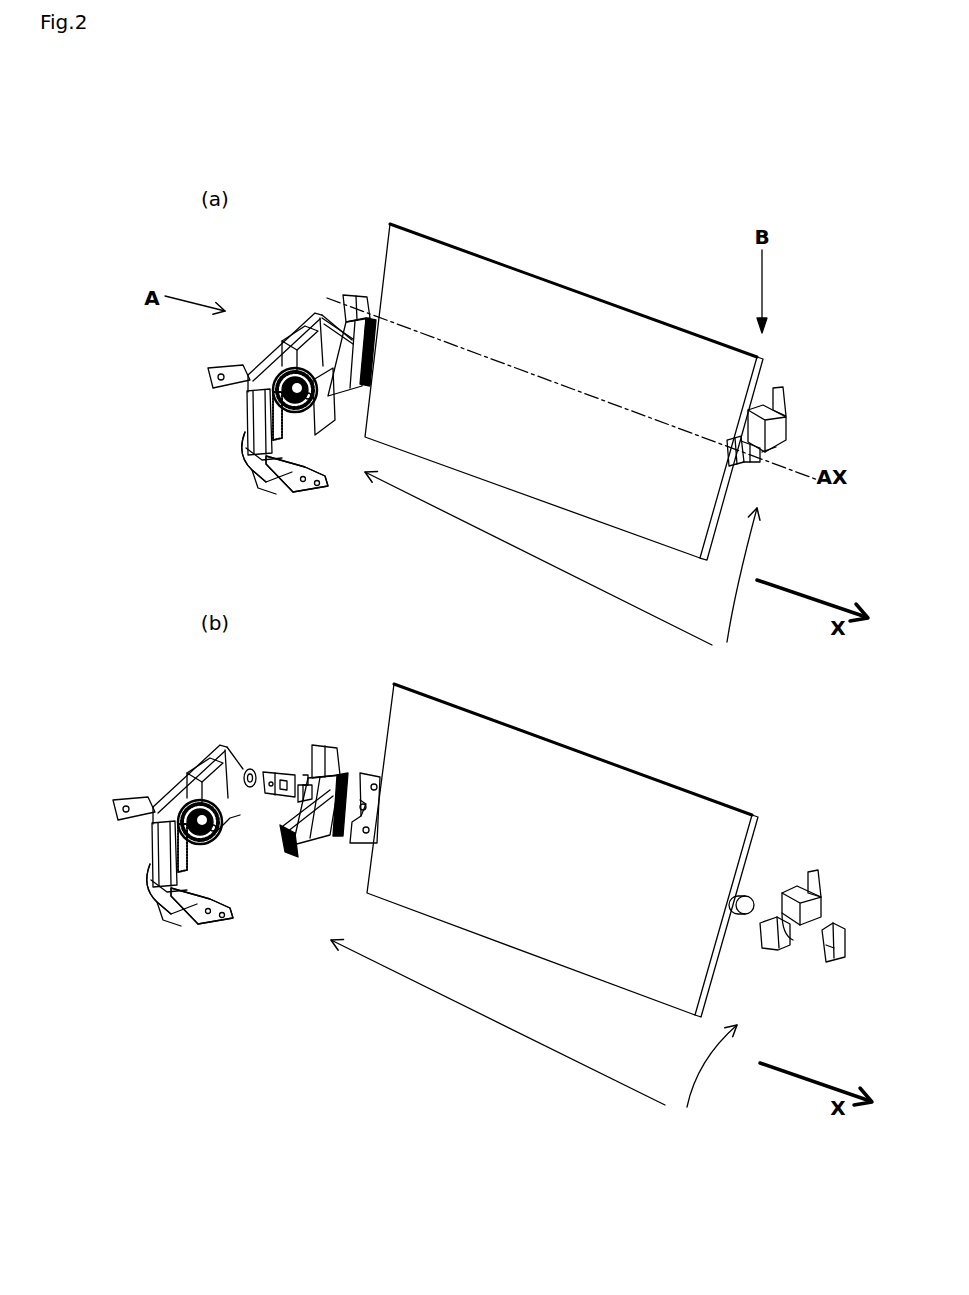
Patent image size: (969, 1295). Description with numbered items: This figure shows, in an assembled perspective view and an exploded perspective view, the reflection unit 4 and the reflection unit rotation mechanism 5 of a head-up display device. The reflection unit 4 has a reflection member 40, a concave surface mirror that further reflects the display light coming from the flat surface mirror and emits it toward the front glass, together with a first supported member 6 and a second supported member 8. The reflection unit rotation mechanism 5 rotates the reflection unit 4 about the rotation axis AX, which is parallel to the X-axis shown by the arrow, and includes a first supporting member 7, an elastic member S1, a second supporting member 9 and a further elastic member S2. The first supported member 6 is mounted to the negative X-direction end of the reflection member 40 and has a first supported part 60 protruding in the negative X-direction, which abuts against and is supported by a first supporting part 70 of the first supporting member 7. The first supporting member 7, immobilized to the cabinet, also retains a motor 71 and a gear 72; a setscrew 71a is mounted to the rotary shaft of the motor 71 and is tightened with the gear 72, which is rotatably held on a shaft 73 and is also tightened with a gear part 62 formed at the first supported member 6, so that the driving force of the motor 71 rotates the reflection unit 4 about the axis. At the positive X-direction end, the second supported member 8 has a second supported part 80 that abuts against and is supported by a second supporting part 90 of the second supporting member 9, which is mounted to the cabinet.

The reflection unit 4 is at (557, 262).
The reflection member 40 is at (614, 316).
The reflection unit rotation mechanism 5 is at (544, 800).
The first supported member 6 is at (355, 297).
The first supporting member 7 is at (300, 340).
The second supported member 8 is at (747, 887).
The second supporting member 9 is at (780, 392).
The first supported part 60 is at (306, 786).
The gear part 62 is at (320, 407).
The first supporting part 70 is at (248, 768).
The motor 71 is at (313, 480).
The setscrew 71a is at (270, 453).
The gear 72 is at (300, 412).
The shaft 73 is at (232, 818).
The second supported part 80 is at (768, 462).
The second supporting part 90 is at (802, 940).
The second elastic member S1 is at (275, 770).
The second elastic member S2 is at (768, 452).